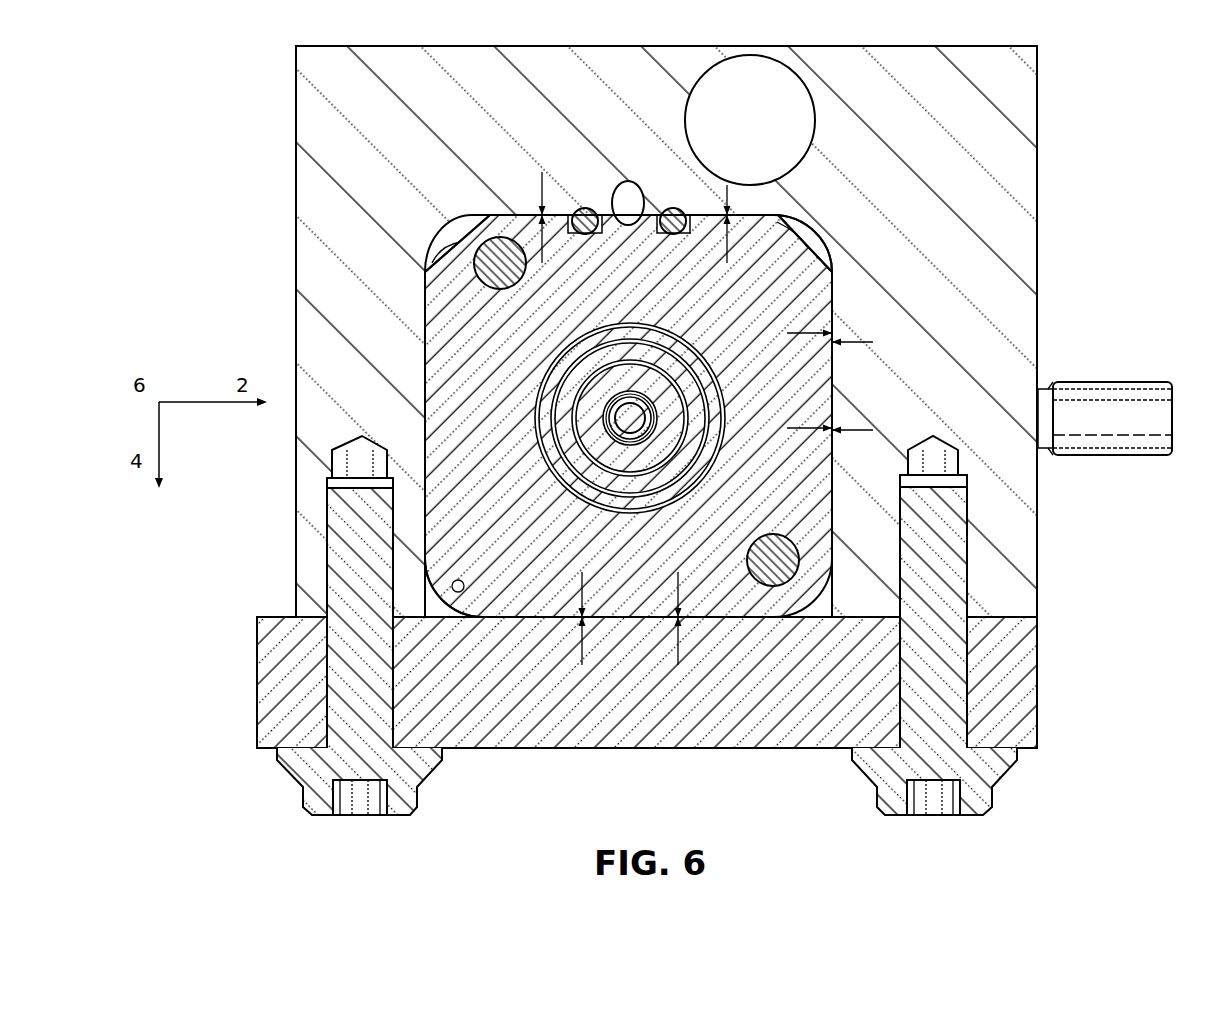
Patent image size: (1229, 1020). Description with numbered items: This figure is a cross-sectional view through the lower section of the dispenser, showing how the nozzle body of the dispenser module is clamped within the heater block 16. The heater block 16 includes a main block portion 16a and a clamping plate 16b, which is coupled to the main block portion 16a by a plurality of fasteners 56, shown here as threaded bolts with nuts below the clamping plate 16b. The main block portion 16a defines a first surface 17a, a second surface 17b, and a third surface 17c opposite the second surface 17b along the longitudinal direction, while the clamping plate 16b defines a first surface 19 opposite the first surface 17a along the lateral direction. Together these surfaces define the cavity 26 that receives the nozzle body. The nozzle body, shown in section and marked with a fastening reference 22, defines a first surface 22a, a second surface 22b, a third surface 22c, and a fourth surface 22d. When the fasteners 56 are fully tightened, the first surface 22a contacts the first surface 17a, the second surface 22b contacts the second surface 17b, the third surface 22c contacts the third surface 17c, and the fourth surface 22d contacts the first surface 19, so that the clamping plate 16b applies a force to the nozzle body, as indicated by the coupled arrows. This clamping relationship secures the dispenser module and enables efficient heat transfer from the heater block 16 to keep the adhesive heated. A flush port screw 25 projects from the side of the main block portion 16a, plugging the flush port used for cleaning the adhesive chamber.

The heater block 16 is at (1005, 200).
The main block portion 16a is at (1005, 85).
The clamping plate 16b is at (1007, 677).
The first surface 17a is at (762, 217).
The second surface 17b is at (425, 403).
The third surface 17c is at (833, 407).
The first surface 19 is at (626, 617).
The insert block 22 is at (800, 310).
The first surface 22a is at (513, 213).
The second surface 22b is at (425, 268).
The third surface 22c is at (833, 277).
The fourth surface 22d is at (608, 617).
The flush port screw 25 is at (1130, 382).
The cavity 26 is at (438, 606).
The fasteners 56 is at (410, 782).